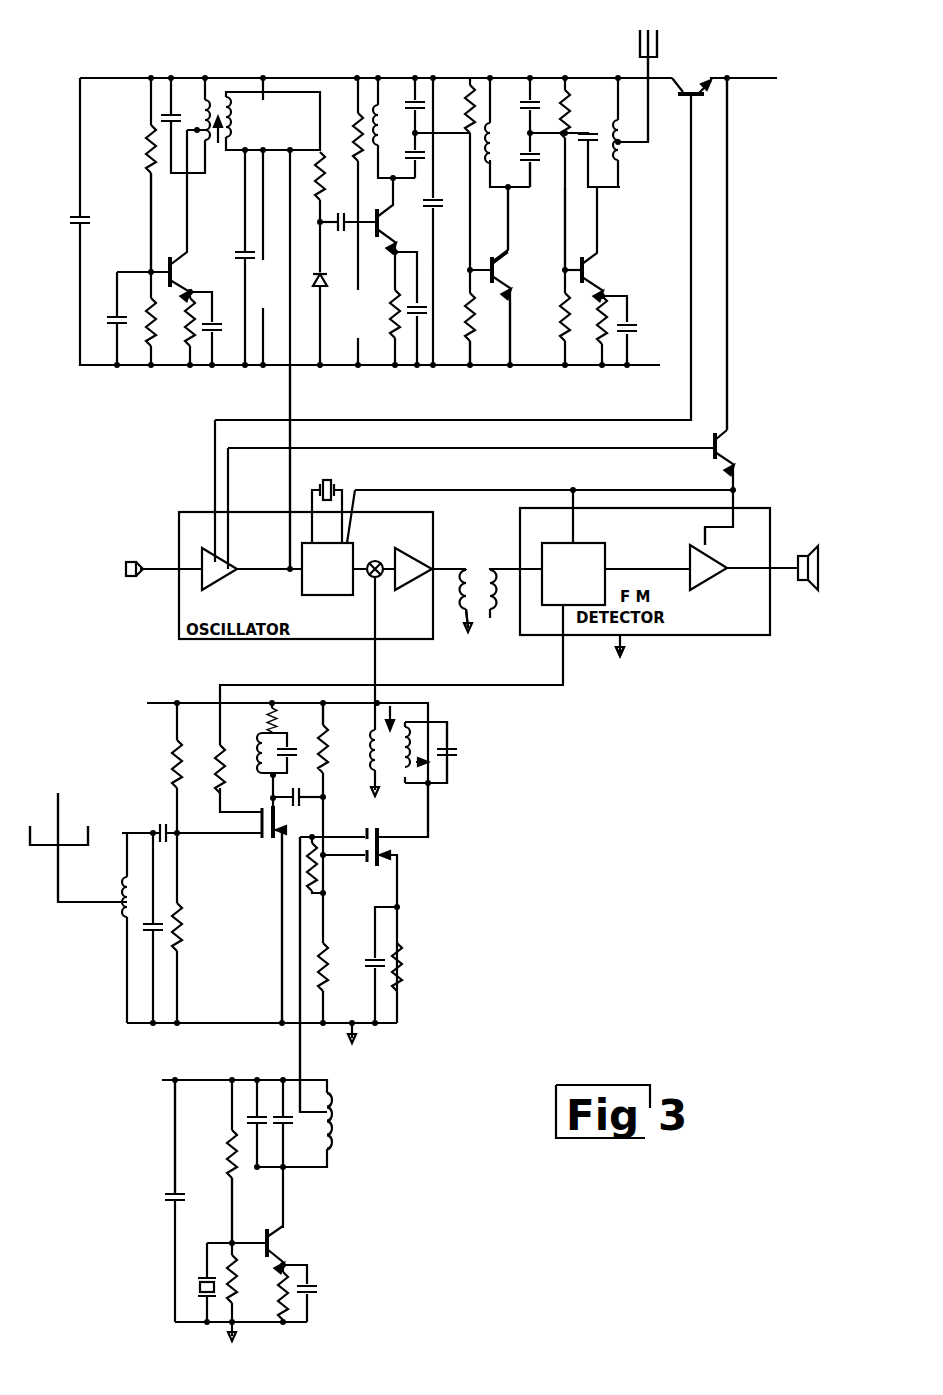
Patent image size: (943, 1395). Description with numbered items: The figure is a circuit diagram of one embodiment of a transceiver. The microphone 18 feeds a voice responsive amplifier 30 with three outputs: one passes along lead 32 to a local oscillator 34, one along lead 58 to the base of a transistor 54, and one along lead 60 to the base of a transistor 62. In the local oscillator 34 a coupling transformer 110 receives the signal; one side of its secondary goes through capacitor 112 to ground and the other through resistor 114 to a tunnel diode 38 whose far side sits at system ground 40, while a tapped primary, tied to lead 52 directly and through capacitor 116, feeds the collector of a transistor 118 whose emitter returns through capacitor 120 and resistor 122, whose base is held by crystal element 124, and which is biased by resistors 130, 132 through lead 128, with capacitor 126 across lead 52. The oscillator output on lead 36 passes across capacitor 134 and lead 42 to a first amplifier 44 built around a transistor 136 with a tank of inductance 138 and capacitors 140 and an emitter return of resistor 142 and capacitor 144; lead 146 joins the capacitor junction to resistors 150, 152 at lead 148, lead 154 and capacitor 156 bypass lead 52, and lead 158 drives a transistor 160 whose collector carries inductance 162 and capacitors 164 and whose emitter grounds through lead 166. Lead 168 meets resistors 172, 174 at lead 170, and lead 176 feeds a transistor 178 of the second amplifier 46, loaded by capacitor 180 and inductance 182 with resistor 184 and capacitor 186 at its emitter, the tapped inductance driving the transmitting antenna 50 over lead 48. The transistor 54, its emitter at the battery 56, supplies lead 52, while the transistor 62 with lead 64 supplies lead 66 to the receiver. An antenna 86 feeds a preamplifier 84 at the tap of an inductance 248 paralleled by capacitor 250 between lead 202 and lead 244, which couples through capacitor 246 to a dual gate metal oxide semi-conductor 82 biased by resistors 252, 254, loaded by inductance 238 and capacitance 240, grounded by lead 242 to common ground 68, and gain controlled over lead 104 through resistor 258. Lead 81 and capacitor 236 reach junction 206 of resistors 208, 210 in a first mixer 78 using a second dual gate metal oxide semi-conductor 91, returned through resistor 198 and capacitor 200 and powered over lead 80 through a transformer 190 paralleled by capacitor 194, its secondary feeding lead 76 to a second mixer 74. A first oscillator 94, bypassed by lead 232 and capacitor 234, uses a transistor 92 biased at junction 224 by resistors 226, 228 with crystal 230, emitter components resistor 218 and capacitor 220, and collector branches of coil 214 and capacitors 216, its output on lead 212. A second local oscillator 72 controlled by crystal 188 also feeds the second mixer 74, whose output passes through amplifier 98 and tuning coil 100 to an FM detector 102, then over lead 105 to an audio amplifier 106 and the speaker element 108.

The microphone 18 is at (130, 568).
The voice responsive amplifier 30 is at (224, 585).
The lead 32 is at (290, 395).
The local oscillator 34 is at (108, 70).
The lead 36 is at (314, 223).
The tunnel diode 38 is at (320, 287).
The system ground 40 is at (657, 385).
The lead 42 is at (332, 247).
The first amplifier 44 is at (398, 68).
The second amplifier 46 is at (573, 68).
The lead 48 is at (648, 112).
The transmitting antenna 50 is at (662, 52).
The lead 52 is at (297, 78).
The transistor 54 is at (690, 90).
The battery 56 is at (803, 68).
The lead 58 is at (515, 421).
The lead 60 is at (572, 450).
The transistor 62 is at (733, 447).
The lead 64 is at (727, 232).
The lead 66 is at (733, 490).
The common system ground 68 is at (474, 636).
The second local oscillator 72 is at (340, 588).
The second mixer 74 is at (380, 550).
The lead 76 is at (377, 660).
The first mixer 78 is at (463, 804).
The lead 80 is at (428, 822).
The lead 81 is at (300, 782).
The dual gate metal oxide semi-conductor 82 is at (245, 849).
The preamplifier 84 is at (90, 935).
The antenna 86 is at (71, 810).
The second dual gate metal oxide semi-conductor 91 is at (405, 851).
The transistor 92 is at (298, 1243).
The first oscillator 94 is at (318, 1192).
The amplifier 98 is at (432, 548).
The tuning coil 100 is at (481, 562).
The FM detector 102 is at (605, 550).
The lead 104 is at (340, 703).
The lead 105 is at (690, 562).
The audio amplifier 106 is at (700, 580).
The speaker element 108 is at (808, 556).
The coupling transformer 110 is at (215, 92).
The capacitor 112 is at (245, 250).
The resistor 114 is at (318, 140).
The capacitor 116 is at (173, 110).
The transistor 118 is at (182, 271).
The capacitor 120 is at (212, 345).
The resistor 122 is at (190, 350).
The crystal element 124 is at (105, 321).
The capacitor 126 is at (78, 218).
The lead 128 is at (151, 192).
The resistor 130 is at (150, 158).
The resistor 132 is at (151, 350).
The capacitor 134 is at (340, 208).
The transistor 136 is at (390, 227).
The inductance 138 is at (368, 76).
The capacitors 140 is at (420, 76).
The resistor 142 is at (395, 292).
The capacitor 144 is at (418, 345).
The lead 146 is at (454, 128).
The lead 148 is at (470, 265).
The resistor 150 is at (488, 78).
The resistor 152 is at (472, 350).
The lead 154 is at (420, 160).
The capacitor 156 is at (421, 194).
The lead 158 is at (492, 250).
The transistor 160 is at (505, 271).
The inductance 162 is at (525, 150).
The capacitors 164 is at (548, 67).
The lead 166 is at (512, 305).
The lead 168 is at (549, 191).
The lead 170 is at (549, 229).
The resistor 172 is at (583, 80).
The resistor 174 is at (565, 335).
The lead 176 is at (585, 255).
The transistor 178 is at (600, 270).
The capacitor 180 is at (593, 150).
The inductance 182 is at (625, 142).
The resistor 184 is at (602, 355).
The capacitor 186 is at (630, 330).
The crystal 188 is at (346, 482).
The transformer 190 is at (375, 770).
The capacitor 194 is at (452, 752).
The resistor 198 is at (405, 960).
The capacitor 200 is at (395, 975).
The lead 202 is at (235, 1023).
The junction 206 is at (330, 896).
The resistor 208 is at (350, 748).
The resistor 210 is at (325, 950).
The lead 212 is at (300, 1062).
The coil 214 is at (332, 1130).
The capacitors 216 is at (270, 1128).
The resistor 218 is at (297, 1300).
The capacitor 220 is at (312, 1290).
The junction 224 is at (232, 1215).
The resistor 226 is at (232, 1270).
The resistor 228 is at (232, 1145).
The crystal 230 is at (198, 1295).
The lead 232 is at (175, 1135).
The capacitor 234 is at (170, 1200).
The capacitor 236 is at (325, 806).
The inductance 238 is at (255, 733).
The capacitance 240 is at (293, 735).
The lead 242 is at (282, 950).
The lead 244 is at (134, 818).
The capacitor 246 is at (163, 818).
The inductance 248 is at (120, 895).
The capacitor 250 is at (140, 930).
The resistor 252 is at (177, 760).
The resistor 254 is at (182, 930).
The resistor 258 is at (220, 742).